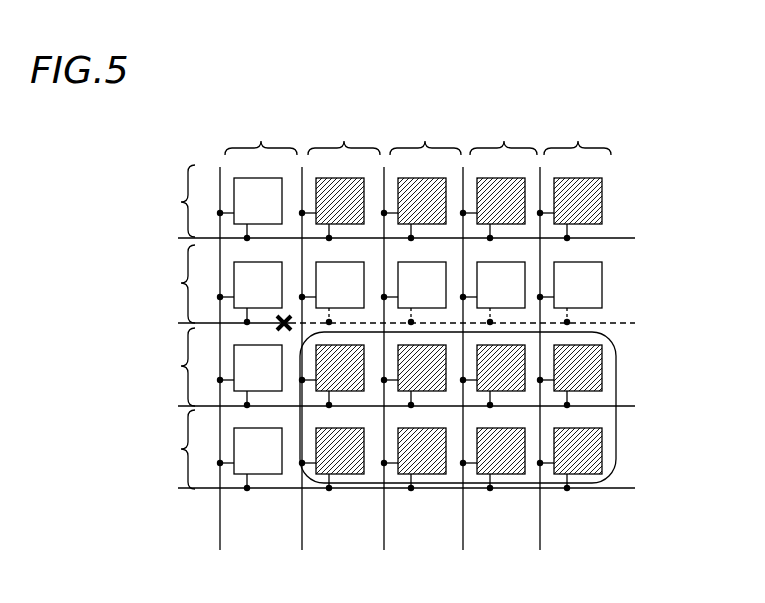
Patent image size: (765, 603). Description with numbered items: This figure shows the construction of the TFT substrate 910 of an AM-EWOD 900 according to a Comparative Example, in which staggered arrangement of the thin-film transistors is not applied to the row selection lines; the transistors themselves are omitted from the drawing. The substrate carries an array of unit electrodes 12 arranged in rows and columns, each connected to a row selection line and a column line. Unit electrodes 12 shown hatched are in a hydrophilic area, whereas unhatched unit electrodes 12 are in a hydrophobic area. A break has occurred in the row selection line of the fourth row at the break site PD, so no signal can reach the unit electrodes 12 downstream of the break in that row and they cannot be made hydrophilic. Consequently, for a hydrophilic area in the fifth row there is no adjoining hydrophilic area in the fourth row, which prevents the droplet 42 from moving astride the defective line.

The AM-EWOD 900 is at (419, 330).
The TFT substrate 910 is at (625, 191).
The unit electrode 12 is at (581, 283).
The droplet 42 is at (613, 392).
The break site PD is at (285, 312).